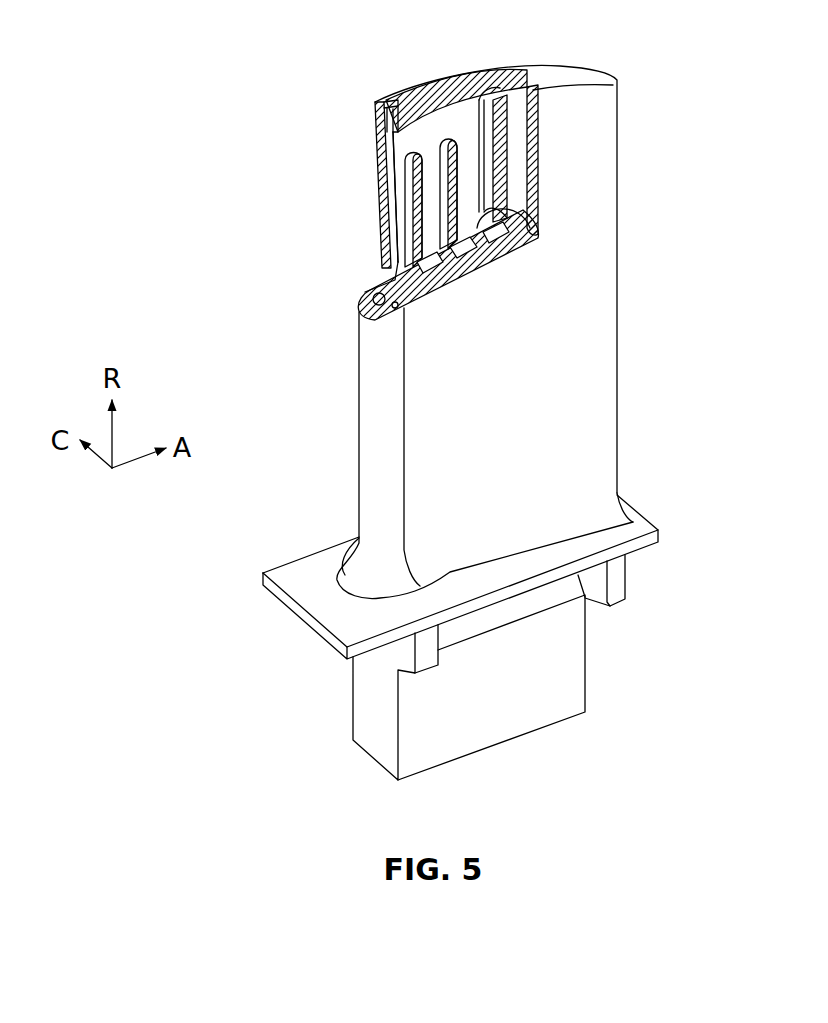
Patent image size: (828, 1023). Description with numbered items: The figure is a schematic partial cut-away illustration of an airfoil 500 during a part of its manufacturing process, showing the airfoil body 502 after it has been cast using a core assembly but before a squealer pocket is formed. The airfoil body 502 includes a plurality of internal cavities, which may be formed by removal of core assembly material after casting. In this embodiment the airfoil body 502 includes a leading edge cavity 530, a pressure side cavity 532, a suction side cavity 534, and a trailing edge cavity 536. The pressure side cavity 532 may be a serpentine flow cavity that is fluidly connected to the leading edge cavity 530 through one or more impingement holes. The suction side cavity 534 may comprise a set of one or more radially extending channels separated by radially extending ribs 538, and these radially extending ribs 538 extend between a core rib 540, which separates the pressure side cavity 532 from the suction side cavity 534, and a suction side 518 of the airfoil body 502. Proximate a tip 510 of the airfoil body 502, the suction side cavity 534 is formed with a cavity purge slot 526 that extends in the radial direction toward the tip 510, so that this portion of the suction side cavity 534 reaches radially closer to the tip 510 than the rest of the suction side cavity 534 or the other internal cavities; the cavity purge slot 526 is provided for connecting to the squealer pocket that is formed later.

The airfoil 500 is at (278, 48).
The airfoil body 502 is at (603, 300).
The tip 510 is at (570, 77).
The suction side 518 is at (389, 224).
The cavity purge slot 526 is at (376, 124).
The leading edge cavity 530 is at (376, 289).
The pressure side cavity 532 is at (493, 258).
The suction side cavity 534 is at (402, 153).
The trailing edge cavity 536 is at (514, 178).
The radially extending ribs 538 is at (415, 181).
The core rib 540 is at (522, 240).